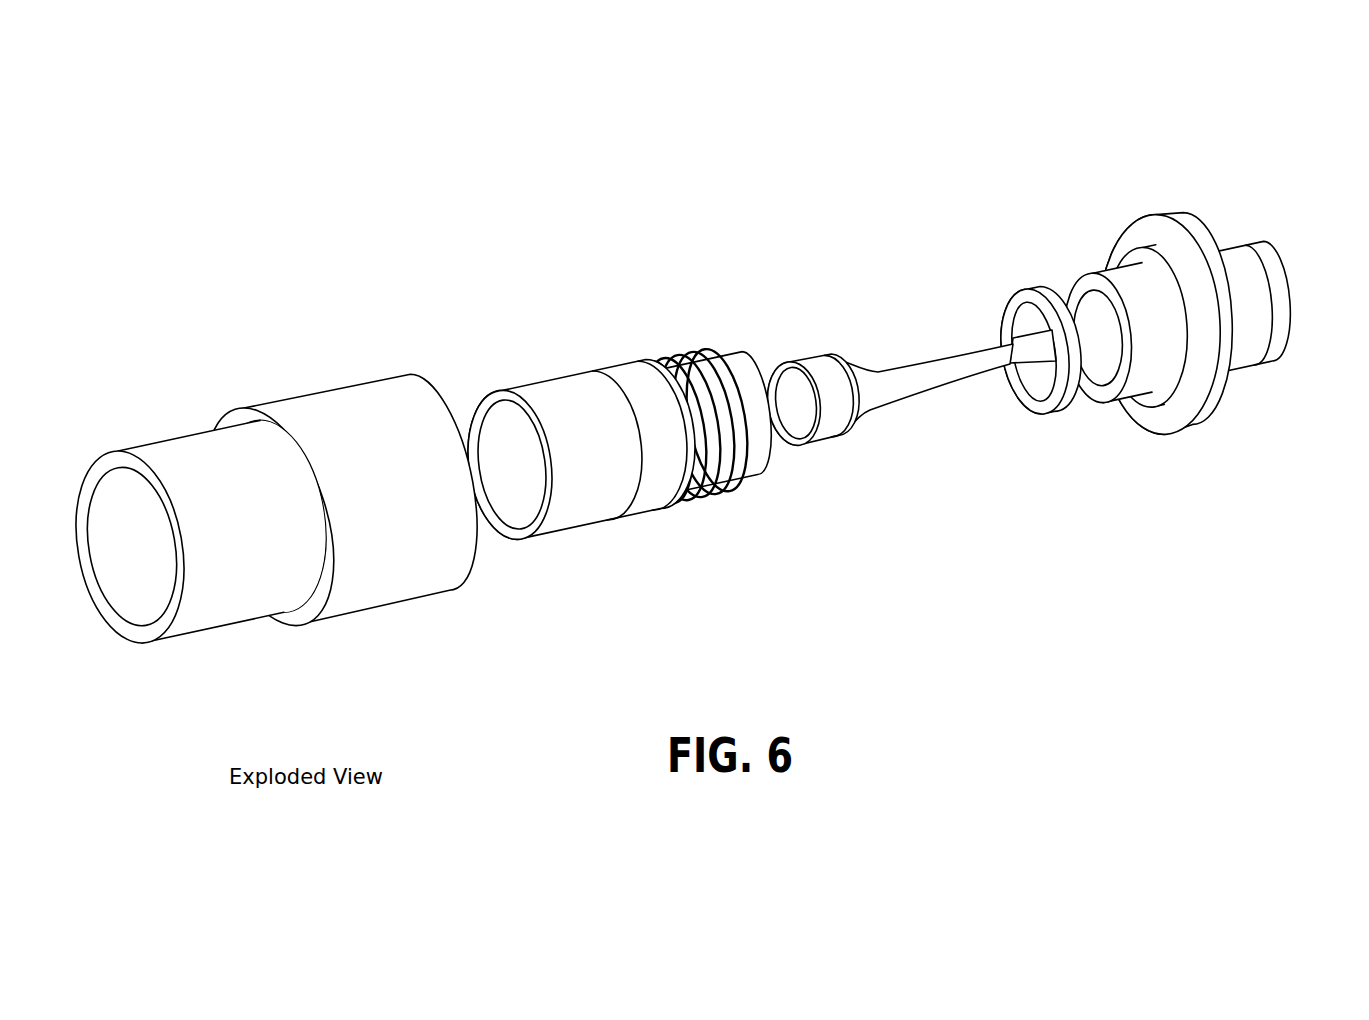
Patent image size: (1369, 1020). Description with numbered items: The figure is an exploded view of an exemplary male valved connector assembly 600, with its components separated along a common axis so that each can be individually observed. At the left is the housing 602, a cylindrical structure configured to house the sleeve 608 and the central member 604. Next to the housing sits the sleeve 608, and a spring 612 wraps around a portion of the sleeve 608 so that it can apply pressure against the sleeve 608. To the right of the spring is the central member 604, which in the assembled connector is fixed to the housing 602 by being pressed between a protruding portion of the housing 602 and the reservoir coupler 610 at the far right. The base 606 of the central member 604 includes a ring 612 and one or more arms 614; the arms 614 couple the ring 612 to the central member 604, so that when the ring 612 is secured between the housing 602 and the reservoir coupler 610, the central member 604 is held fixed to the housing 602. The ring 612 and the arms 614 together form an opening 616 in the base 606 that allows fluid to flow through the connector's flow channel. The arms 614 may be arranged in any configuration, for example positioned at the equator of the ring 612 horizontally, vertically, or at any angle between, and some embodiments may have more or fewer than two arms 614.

The connector assembly 600 is at (268, 184).
The housing 602 is at (334, 422).
The central member 604 is at (870, 393).
The base 606 is at (1062, 436).
The sleeve 608 is at (562, 400).
The reservoir coupler 610 is at (1173, 242).
The spring / ring 612 is at (690, 493).
The arms 614 is at (1045, 357).
The opening 616 is at (1020, 398).